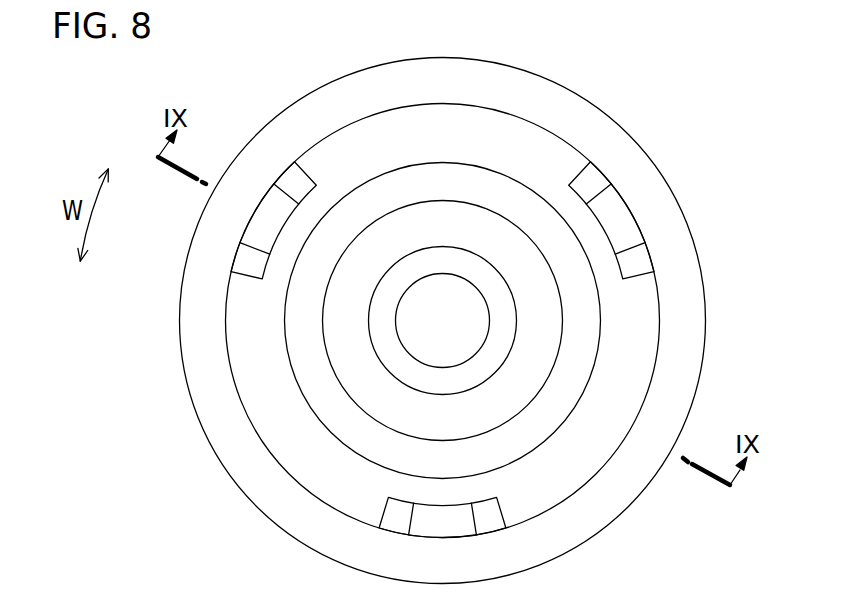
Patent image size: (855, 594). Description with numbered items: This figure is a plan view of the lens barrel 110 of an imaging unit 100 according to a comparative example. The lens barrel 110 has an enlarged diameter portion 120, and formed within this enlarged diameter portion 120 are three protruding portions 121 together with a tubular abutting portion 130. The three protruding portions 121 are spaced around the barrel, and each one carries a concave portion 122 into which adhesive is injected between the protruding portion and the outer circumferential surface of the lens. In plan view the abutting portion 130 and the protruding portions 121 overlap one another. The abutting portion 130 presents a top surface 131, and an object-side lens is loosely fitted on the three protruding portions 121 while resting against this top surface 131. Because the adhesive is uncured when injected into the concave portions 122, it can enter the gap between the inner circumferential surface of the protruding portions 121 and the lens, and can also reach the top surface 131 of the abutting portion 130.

The imaging unit 100 is at (280, 62).
The lens barrel 110 is at (641, 130).
The enlarged diameter portion 120 is at (697, 372).
The protruding portion 121 is at (243, 272).
The concave portion 122 is at (283, 192).
The abutting portion 130 is at (277, 448).
The top surface 131 is at (323, 480).